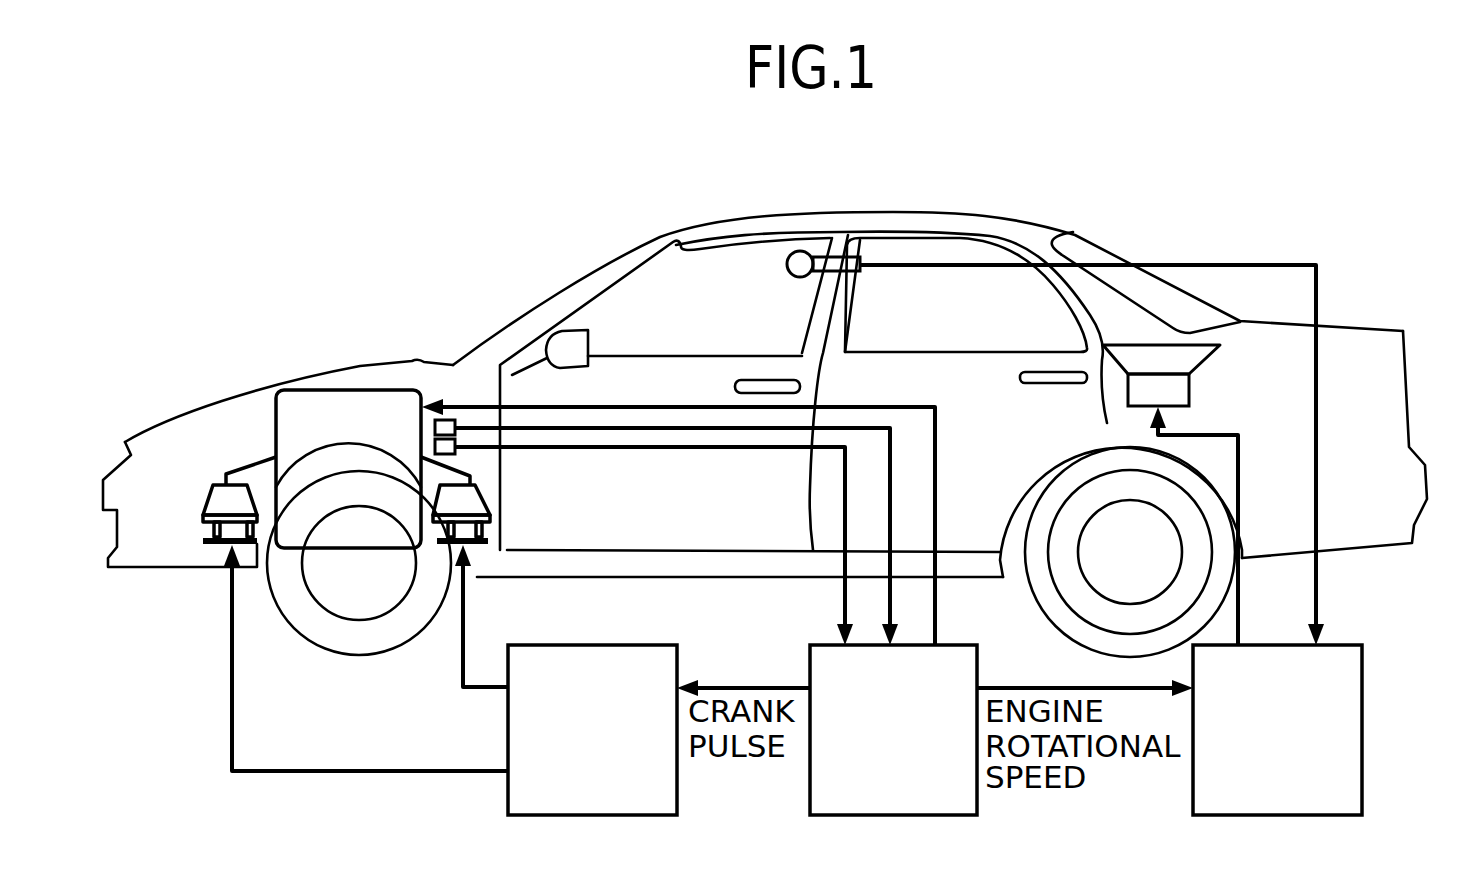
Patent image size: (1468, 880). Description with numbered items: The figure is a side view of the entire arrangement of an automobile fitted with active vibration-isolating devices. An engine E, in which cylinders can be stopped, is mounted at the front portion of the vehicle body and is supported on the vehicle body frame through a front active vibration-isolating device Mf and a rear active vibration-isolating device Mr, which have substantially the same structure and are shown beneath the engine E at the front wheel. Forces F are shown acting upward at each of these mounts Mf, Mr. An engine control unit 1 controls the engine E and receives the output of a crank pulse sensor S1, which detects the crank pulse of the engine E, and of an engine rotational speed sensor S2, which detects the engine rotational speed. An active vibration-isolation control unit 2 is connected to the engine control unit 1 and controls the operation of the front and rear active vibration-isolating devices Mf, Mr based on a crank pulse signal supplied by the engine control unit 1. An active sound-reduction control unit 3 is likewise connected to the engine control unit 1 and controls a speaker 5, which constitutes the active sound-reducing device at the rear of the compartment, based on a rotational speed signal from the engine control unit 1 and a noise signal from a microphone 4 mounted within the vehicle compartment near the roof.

The engine control unit 1 is at (977, 802).
The active vibration-isolation control unit 2 is at (677, 790).
The active sound-reduction control unit 3 is at (1362, 790).
The microphone 4 is at (800, 250).
The speaker 5 is at (1185, 358).
The engine E is at (308, 410).
The front active vibration-isolating device Mf is at (227, 502).
The rear active vibration-isolating device Mr is at (478, 502).
The actuator driving force F is at (207, 546).
The crank pulse sensor S1 is at (437, 427).
The engine rotational speed sensor S2 is at (437, 447).